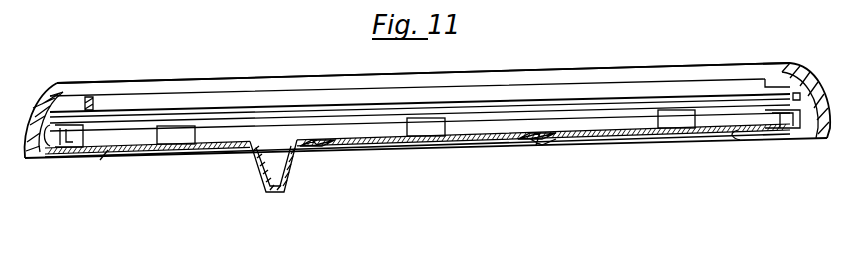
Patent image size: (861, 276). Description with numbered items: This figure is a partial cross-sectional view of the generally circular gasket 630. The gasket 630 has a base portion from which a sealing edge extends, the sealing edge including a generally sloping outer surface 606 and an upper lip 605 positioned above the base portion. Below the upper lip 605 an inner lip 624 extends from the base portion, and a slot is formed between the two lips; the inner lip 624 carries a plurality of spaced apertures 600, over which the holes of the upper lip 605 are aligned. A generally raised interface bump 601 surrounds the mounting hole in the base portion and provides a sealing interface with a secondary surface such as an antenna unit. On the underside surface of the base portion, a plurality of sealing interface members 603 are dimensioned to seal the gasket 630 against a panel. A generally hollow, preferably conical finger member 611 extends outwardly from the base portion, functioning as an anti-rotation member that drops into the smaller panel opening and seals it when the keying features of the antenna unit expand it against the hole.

The apertures 600 is at (178, 133).
The interface bump 601 is at (320, 147).
The sealing interface members 603 is at (106, 158).
The upper lip 605 is at (600, 74).
The sloping outer surface 606 is at (810, 72).
The conical finger member 611 is at (290, 178).
The inner lip 624 is at (620, 118).
The gasket 630 is at (168, 203).